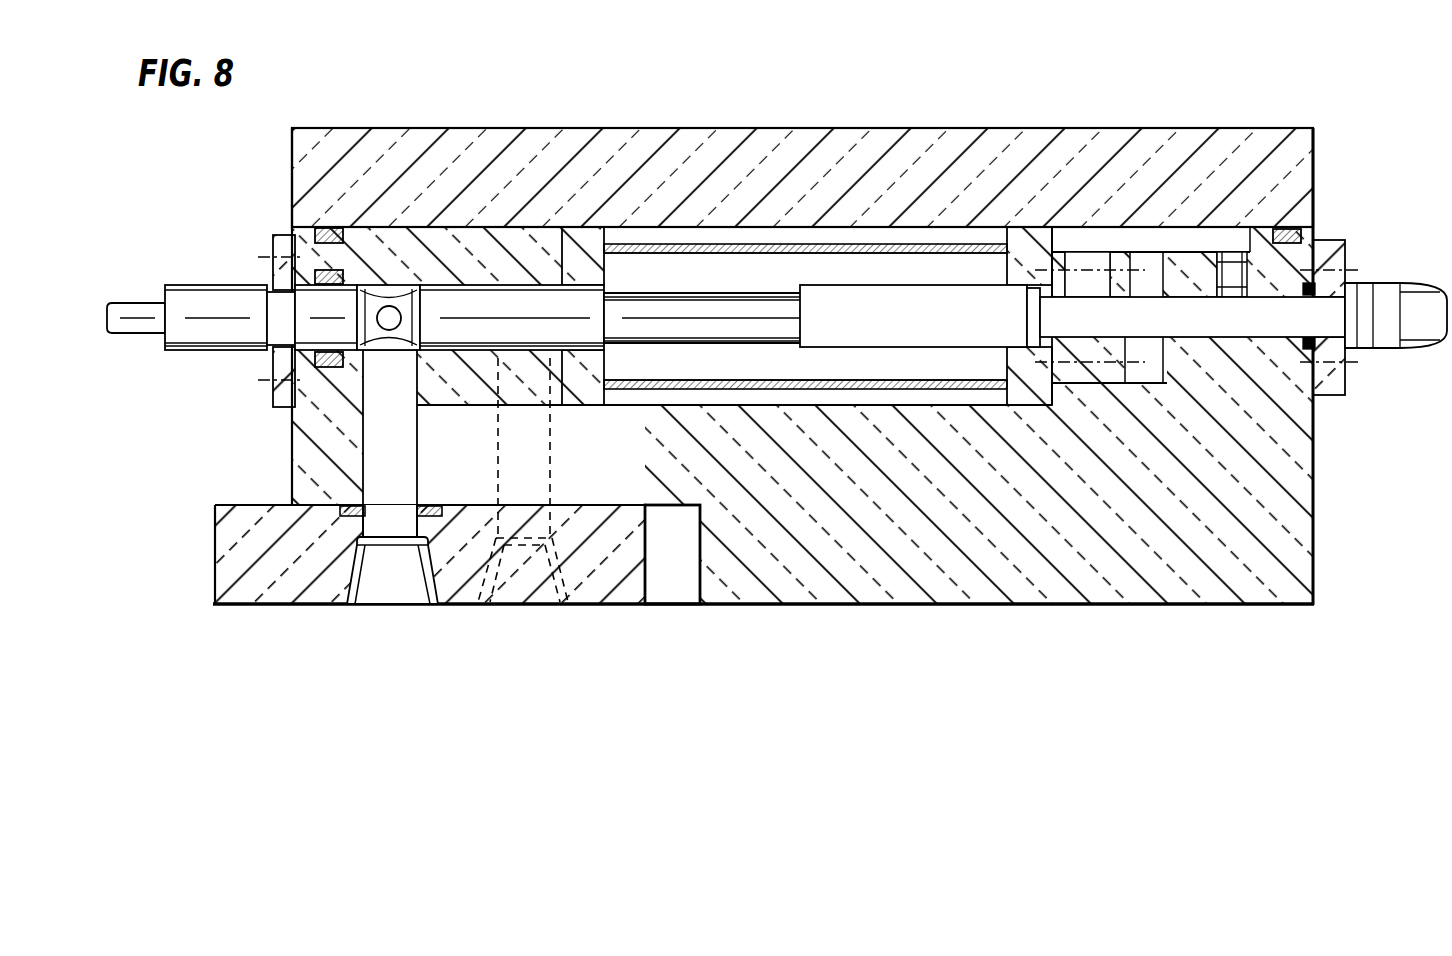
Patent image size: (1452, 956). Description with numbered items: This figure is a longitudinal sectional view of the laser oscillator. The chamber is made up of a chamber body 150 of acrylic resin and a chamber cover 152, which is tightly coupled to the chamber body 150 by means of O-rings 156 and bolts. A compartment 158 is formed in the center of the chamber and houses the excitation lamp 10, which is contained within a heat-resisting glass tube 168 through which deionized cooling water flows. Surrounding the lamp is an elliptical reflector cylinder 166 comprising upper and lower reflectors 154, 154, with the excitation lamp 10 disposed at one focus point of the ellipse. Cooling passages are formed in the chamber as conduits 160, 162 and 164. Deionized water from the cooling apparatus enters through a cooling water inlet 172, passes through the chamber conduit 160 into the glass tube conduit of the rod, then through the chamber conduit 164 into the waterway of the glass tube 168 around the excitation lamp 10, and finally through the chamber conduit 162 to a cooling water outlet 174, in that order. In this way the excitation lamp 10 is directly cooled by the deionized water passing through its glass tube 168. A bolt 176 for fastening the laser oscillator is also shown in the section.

The excitation lamp 10 is at (654, 293).
The chamber body 150 is at (875, 560).
The chamber cover 152 is at (472, 128).
The reflector 154 is at (727, 245).
The O-ring 156 is at (322, 232).
The compartment 158 is at (699, 400).
The chamber conduit 160 is at (378, 468).
The chamber conduit 162 is at (515, 432).
The chamber conduit 164 is at (1077, 258).
The elliptical reflector cylinder 166 is at (823, 268).
The heat-resisting glass tube 168 is at (933, 305).
The cooling water inlet 172 is at (395, 585).
The cooling water outlet 174 is at (524, 590).
The bolt 176 is at (1098, 270).